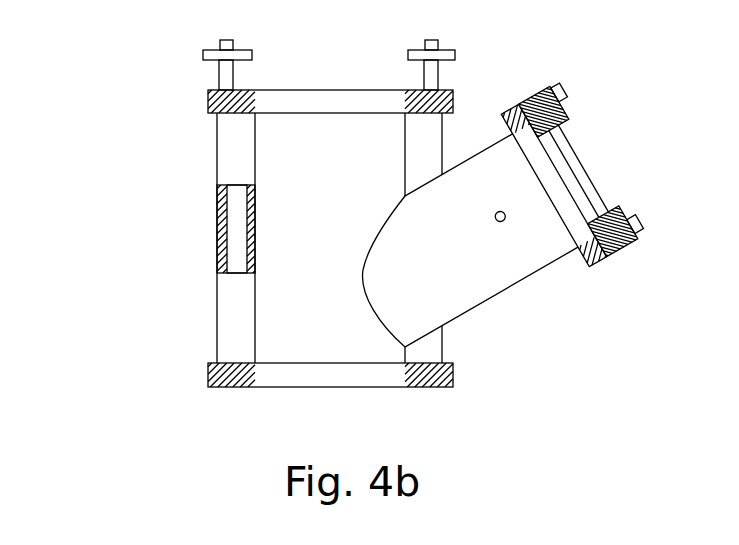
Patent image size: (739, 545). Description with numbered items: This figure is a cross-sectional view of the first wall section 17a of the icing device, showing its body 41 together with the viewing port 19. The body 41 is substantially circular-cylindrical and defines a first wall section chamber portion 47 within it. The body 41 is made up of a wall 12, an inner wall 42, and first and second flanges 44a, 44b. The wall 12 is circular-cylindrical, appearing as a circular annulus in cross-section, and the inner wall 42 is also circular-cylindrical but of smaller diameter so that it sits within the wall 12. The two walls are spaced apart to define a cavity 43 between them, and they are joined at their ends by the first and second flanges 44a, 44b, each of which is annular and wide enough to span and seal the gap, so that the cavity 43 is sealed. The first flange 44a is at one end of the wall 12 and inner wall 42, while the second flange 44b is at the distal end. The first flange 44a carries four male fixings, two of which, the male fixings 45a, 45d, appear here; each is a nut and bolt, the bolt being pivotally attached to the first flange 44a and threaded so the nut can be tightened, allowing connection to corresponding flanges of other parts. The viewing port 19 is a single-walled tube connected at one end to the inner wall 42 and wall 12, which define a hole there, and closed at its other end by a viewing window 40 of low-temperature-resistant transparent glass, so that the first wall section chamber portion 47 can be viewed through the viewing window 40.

The first wall section 17a is at (128, 74).
The first flange 44a is at (312, 90).
The second flange 44b is at (357, 388).
The male fixing 45a is at (266, 28).
The male fixing 45d is at (447, 50).
The body 41 is at (217, 140).
The inner wall 42 is at (255, 335).
The cavity 43 is at (237, 332).
The wall 12 is at (217, 235).
The first wall section chamber portion 47 is at (318, 270).
The viewing port 19 is at (530, 277).
The viewing window 40 is at (580, 172).